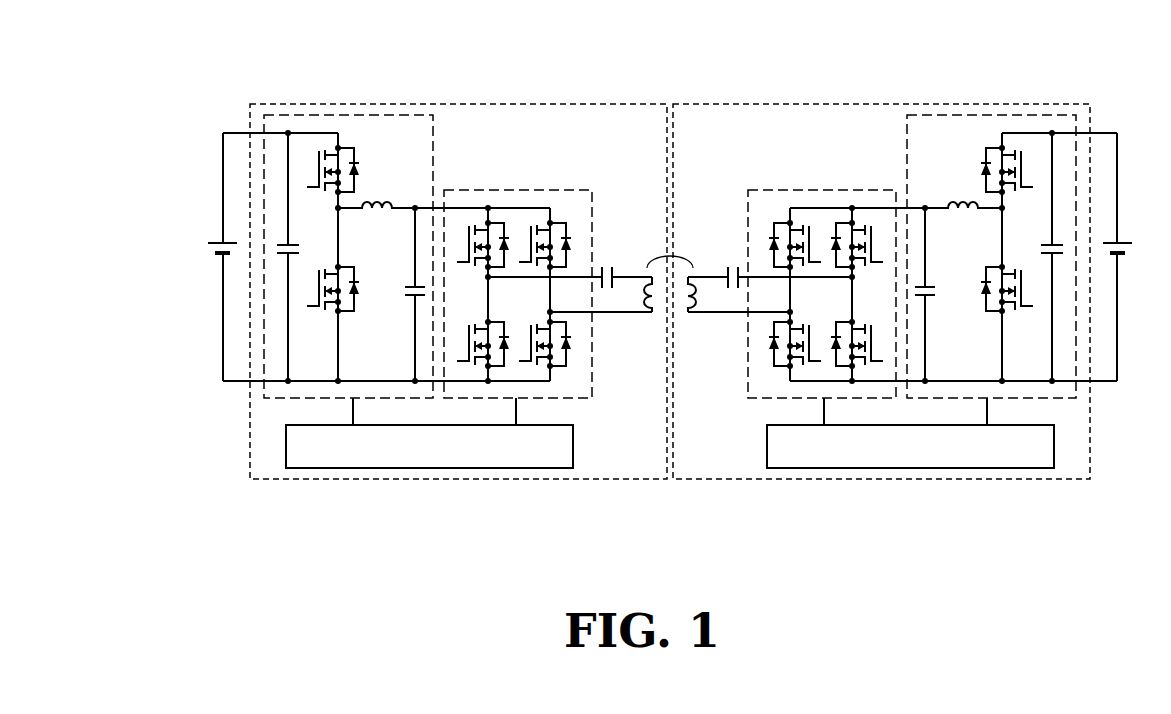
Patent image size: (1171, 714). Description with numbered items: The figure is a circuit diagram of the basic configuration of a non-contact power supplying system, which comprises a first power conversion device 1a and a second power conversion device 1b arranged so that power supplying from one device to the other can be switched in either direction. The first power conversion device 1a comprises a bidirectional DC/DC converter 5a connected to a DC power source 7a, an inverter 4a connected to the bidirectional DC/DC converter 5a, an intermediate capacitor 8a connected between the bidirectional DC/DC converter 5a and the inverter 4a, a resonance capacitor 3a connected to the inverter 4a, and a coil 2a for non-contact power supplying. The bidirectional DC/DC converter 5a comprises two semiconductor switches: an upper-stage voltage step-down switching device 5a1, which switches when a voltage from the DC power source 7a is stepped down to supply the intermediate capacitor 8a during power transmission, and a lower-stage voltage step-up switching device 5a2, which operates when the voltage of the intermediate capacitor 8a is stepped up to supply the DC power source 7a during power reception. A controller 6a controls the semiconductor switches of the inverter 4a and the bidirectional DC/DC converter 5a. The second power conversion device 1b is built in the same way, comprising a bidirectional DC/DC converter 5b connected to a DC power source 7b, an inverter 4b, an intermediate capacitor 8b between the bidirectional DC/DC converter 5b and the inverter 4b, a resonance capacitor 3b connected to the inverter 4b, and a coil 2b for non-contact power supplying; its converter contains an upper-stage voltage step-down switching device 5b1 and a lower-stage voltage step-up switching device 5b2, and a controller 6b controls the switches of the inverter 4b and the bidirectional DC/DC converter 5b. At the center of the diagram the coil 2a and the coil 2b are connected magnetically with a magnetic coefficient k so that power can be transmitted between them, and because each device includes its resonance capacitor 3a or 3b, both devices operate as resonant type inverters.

The first power conversion device 1a is at (627, 479).
The second power conversion device 1b is at (730, 479).
The coil for non-contact power supplying 2a is at (645, 313).
The coil for non-contact power supplying 2b is at (695, 313).
The resonance capacitor 3a is at (610, 263).
The resonance capacitor 3b is at (730, 263).
The inverter 4a is at (492, 189).
The inverter 4b is at (820, 189).
The bidirectional DC/DC converter 5a is at (367, 115).
The bidirectional DC/DC converter 5b is at (962, 115).
The voltage step-down switching device 5a1 is at (330, 147).
The voltage step-up switching device 5a2 is at (323, 318).
The voltage step-down switching device 5b1 is at (1010, 147).
The voltage step-up switching device 5b2 is at (1012, 318).
The controller 6a is at (412, 468).
The controller 6b is at (938, 468).
The DC power source 7a is at (220, 243).
The DC power source 7b is at (1120, 243).
The intermediate capacitor 8a is at (412, 283).
The intermediate capacitor 8b is at (922, 283).
The magnetic coefficient k is at (670, 249).